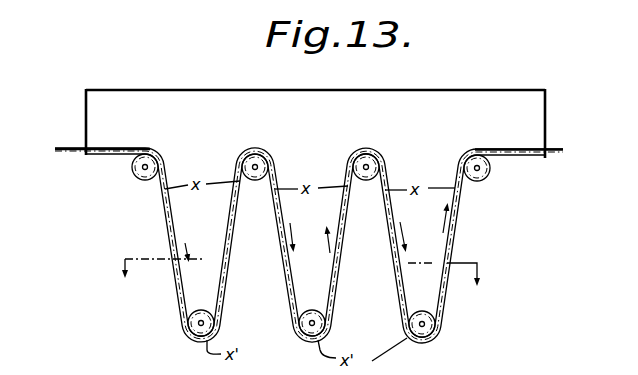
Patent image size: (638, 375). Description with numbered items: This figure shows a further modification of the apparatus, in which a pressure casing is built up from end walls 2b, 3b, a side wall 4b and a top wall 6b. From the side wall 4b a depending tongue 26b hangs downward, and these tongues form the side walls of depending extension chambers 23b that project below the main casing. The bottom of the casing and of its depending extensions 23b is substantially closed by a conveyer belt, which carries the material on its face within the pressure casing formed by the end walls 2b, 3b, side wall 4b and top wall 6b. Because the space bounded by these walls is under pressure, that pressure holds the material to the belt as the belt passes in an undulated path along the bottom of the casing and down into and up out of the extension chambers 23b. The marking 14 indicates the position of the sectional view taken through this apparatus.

The end wall 2b is at (83, 121).
The end wall 3b is at (545, 127).
The side wall 4b is at (315, 122).
The top wall 6b is at (229, 84).
The section line 14 is at (302, 263).
The depending extension chamber 23b is at (192, 286).
The depending tongue 26b is at (311, 245).